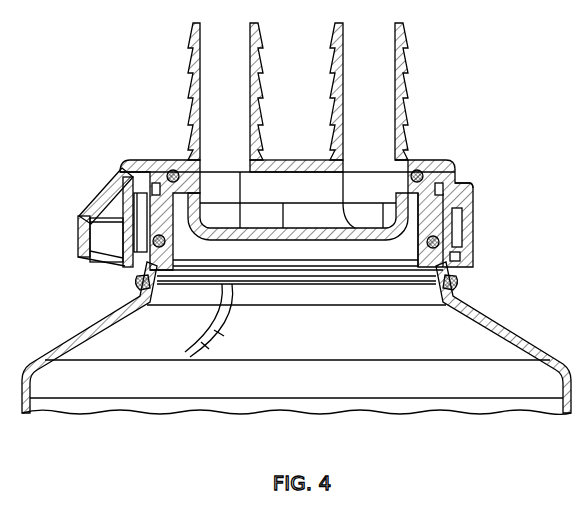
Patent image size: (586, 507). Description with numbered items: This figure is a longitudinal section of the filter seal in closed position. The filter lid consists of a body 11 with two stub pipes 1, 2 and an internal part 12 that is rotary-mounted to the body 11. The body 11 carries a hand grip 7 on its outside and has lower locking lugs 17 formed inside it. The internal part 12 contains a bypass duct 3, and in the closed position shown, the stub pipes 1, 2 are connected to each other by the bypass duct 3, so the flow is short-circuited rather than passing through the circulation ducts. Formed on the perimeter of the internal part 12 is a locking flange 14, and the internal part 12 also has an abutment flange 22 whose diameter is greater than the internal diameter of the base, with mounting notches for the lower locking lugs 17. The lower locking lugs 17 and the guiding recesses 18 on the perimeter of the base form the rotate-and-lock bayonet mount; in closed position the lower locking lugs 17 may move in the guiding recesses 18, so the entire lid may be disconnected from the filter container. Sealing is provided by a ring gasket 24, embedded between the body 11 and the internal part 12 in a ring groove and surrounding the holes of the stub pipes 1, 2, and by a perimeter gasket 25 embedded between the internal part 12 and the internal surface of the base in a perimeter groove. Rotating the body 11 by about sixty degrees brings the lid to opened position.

The stub pipe 1 is at (186, 85).
The stub pipe 2 is at (406, 66).
The bypass duct 3 is at (316, 186).
The hand grip 7 is at (113, 192).
The body 11 is at (143, 161).
The internal part 12 is at (146, 283).
The locking flange 14 is at (460, 165).
The lower locking lug 17 is at (470, 252).
The guiding recess 18 is at (461, 222).
The abutment flange 22 is at (472, 194).
The ring gasket 24 is at (432, 166).
The perimeter gasket 25 is at (130, 240).